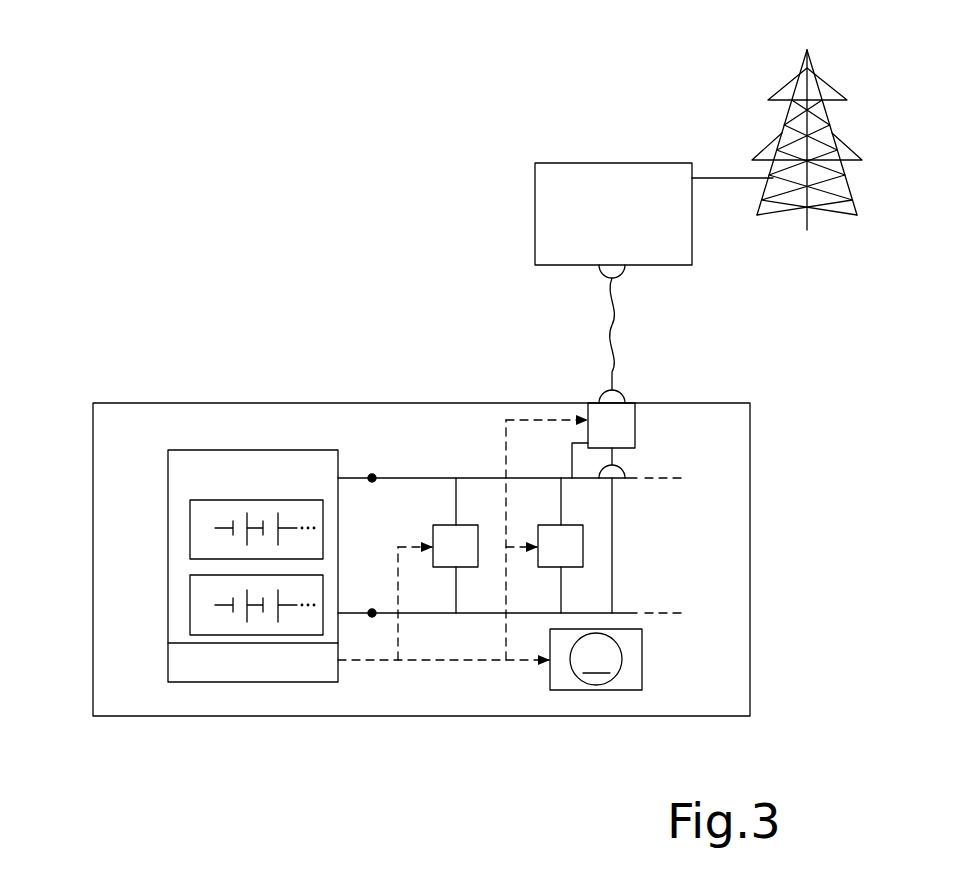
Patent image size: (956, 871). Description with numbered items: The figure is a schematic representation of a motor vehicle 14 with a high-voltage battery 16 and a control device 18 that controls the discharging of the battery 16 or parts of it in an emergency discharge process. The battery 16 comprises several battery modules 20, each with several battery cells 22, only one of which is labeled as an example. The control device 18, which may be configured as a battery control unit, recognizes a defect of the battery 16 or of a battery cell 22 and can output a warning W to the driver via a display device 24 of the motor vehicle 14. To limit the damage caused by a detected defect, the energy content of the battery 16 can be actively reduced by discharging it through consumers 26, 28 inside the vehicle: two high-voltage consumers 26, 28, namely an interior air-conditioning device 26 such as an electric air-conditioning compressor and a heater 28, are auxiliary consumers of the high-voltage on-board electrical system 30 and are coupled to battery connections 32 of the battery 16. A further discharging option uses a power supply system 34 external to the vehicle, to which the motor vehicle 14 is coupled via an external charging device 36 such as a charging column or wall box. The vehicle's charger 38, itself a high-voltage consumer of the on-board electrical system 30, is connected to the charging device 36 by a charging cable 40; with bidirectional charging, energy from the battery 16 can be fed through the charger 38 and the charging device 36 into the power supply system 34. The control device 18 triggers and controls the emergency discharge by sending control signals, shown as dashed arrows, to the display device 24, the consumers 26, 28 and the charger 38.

The motor vehicle 14 is at (172, 388).
The battery 16 is at (248, 450).
The control device 18 is at (318, 663).
The battery module 20 is at (190, 527).
The battery cell 22 is at (243, 612).
The display device 24 is at (600, 690).
The interior air-conditioning device 26 is at (433, 528).
The heater 28 is at (583, 543).
The high-voltage on-board electrical system 30 is at (438, 477).
The battery connections 32 is at (372, 478).
The power supply system 34 is at (787, 78).
The charging device 36 is at (603, 163).
The charger 38 is at (635, 415).
The charging cable 40 is at (615, 330).